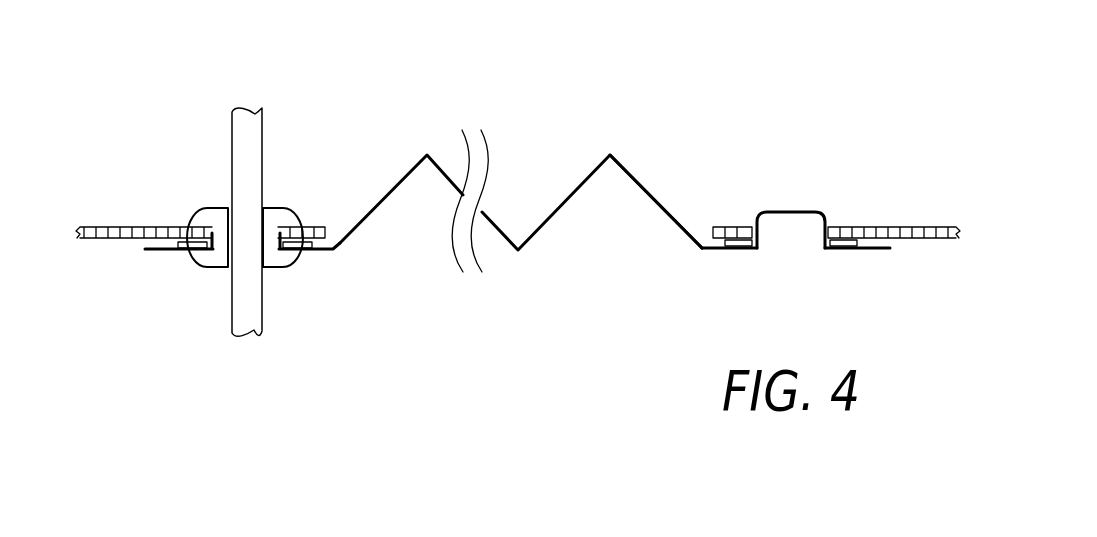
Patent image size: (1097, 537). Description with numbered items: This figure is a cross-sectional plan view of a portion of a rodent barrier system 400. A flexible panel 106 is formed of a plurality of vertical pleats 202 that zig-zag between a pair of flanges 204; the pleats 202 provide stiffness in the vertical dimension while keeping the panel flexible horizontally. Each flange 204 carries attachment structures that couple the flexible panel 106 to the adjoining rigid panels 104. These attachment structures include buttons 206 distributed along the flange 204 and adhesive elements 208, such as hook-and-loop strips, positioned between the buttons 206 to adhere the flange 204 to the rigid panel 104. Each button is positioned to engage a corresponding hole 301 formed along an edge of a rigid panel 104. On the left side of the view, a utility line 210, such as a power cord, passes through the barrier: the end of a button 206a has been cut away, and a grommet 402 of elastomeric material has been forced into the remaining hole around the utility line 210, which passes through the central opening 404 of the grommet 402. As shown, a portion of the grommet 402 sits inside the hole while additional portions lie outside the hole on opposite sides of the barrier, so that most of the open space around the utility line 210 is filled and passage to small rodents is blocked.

The rodent barrier system 400 is at (893, 62).
The utility line 210 is at (262, 123).
The central opening 404 is at (228, 208).
The grommet 402 is at (277, 265).
The rigid panel 104 is at (127, 225).
The button 206a is at (207, 253).
The hole 301 is at (287, 218).
The pleats 202 is at (628, 180).
The flexible panel 106 is at (637, 182).
The adhesive elements 208 is at (723, 245).
The buttons 206 is at (797, 215).
The flanges 204 is at (877, 250).